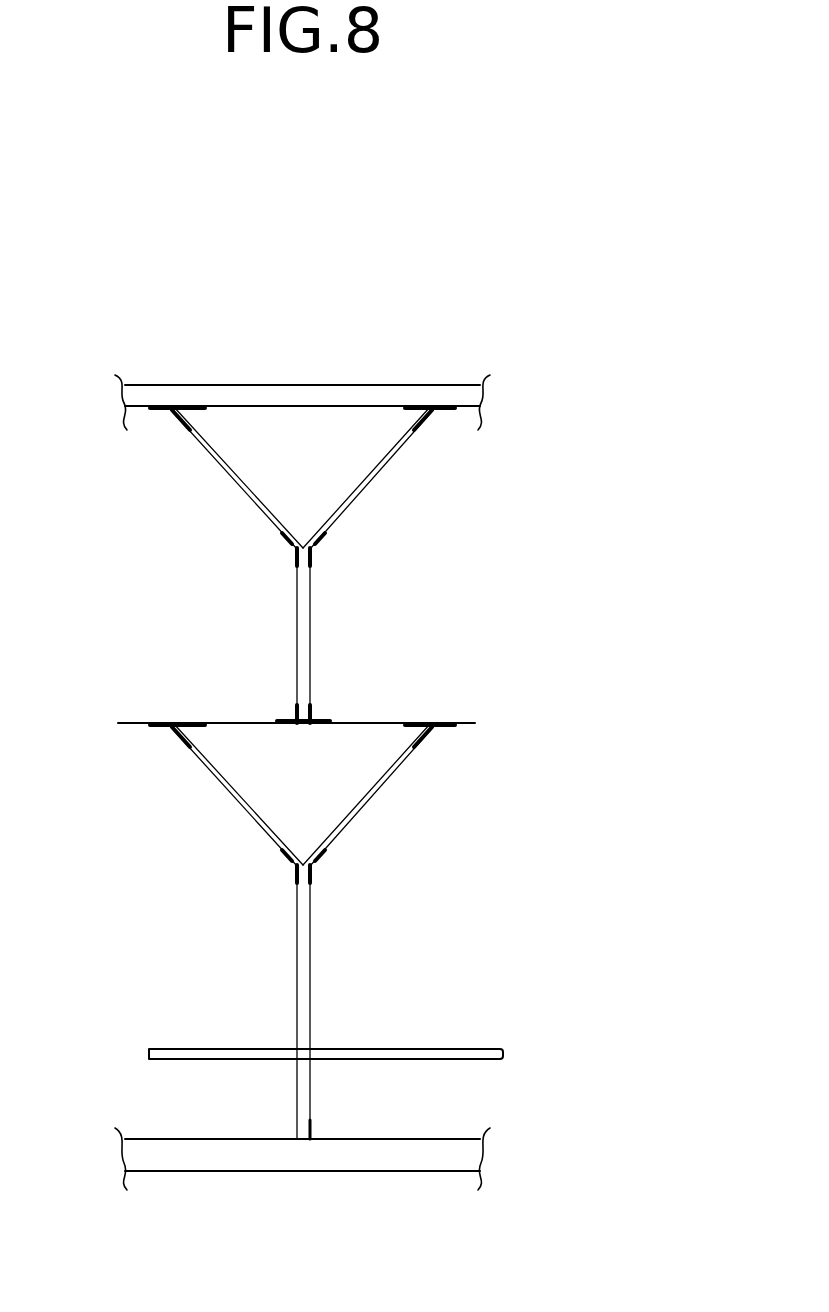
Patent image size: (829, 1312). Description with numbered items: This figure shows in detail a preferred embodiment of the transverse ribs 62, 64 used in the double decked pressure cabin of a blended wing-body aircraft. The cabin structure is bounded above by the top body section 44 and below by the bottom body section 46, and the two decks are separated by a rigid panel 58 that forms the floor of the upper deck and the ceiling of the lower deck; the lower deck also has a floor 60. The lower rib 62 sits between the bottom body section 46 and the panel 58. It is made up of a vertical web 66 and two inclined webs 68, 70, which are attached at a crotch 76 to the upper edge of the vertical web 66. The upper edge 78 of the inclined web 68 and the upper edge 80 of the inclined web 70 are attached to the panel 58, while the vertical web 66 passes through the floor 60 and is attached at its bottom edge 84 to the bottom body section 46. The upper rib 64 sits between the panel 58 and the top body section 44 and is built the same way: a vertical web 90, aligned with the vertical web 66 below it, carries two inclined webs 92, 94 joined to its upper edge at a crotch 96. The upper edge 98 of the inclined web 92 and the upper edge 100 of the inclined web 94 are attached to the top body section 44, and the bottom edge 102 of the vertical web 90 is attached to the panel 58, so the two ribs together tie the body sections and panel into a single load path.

The top body section 44 is at (282, 396).
The bottom body section 46 is at (455, 1163).
The rigid panel 58 is at (462, 722).
The floor 60 is at (433, 1048).
The rib 62 is at (256, 887).
The rib 64 is at (322, 565).
The vertical web 66 is at (311, 961).
The inclined web 68 is at (240, 800).
The inclined web 70 is at (370, 798).
The crotch 76 is at (300, 858).
The upper edge 78 is at (184, 722).
The upper edge 80 is at (420, 722).
The bottom edge 84 is at (311, 1138).
The vertical web 90 is at (311, 635).
The inclined web 92 is at (240, 495).
The inclined web 94 is at (366, 486).
The crotch 96 is at (301, 542).
The upper edge 98 is at (174, 410).
The upper edge 100 is at (430, 412).
The bottom edge 102 is at (314, 719).